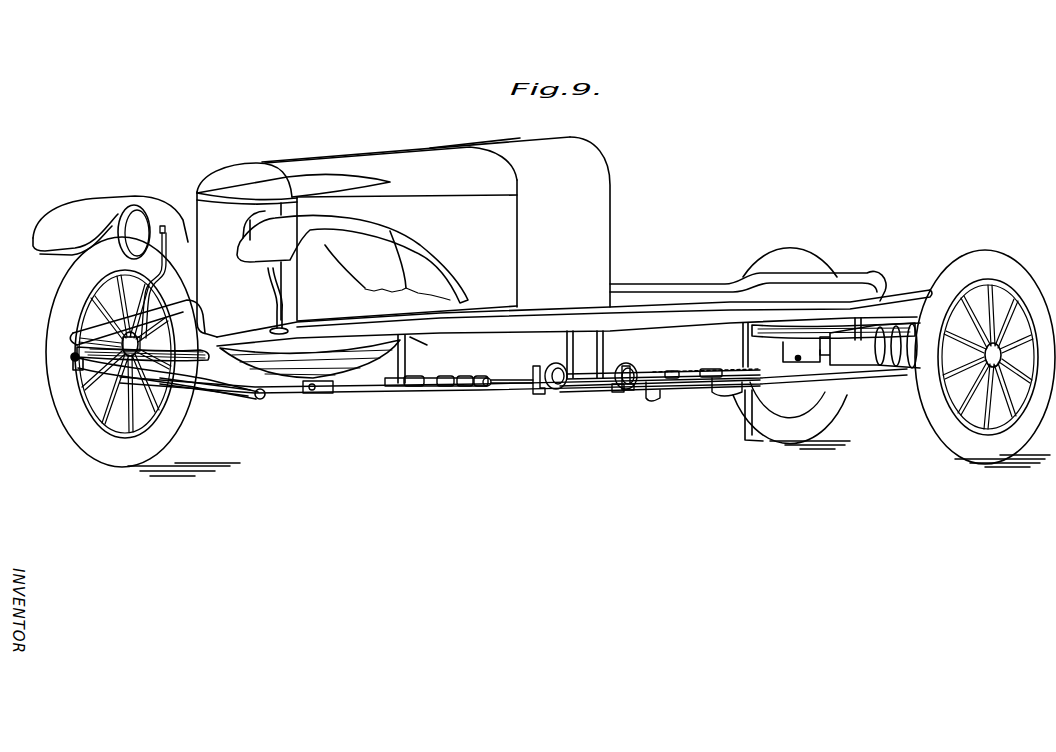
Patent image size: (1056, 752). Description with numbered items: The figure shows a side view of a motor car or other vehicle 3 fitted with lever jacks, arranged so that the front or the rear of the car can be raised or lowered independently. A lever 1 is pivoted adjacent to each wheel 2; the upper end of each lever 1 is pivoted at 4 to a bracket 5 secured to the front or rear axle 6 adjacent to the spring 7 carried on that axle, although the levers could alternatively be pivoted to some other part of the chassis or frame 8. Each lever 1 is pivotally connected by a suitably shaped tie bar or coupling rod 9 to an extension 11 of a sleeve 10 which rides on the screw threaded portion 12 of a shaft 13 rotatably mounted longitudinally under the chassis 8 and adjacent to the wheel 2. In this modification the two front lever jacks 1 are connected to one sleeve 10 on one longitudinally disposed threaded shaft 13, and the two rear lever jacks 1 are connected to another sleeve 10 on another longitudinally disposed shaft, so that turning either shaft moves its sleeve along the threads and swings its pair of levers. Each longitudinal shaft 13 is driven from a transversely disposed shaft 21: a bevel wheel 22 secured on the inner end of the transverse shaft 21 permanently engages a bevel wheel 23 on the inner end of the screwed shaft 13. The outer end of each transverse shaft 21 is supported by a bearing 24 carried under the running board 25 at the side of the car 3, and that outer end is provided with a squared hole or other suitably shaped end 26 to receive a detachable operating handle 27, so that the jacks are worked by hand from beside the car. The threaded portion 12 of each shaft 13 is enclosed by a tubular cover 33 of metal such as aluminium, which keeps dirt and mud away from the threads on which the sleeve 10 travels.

The lever 1 is at (100, 376).
The wheel 2 is at (176, 428).
The motor car or other vehicle 3 is at (563, 222).
The pivot 4 is at (314, 391).
The bracket 5 is at (305, 394).
The axle 6 is at (222, 385).
The spring 7 is at (80, 362).
The frame or chassis 8 is at (706, 284).
The tie bar or coupling rod 9 is at (178, 388).
The sleeve 10 is at (446, 376).
The extension of sleeve 11 is at (490, 377).
The screw threaded portion 12 is at (467, 376).
The shaft 13 is at (528, 392).
The transverse shaft 21 is at (607, 389).
The bevel wheel 22 is at (543, 370).
The bevel wheel 23 is at (560, 366).
The bearing 24 is at (716, 393).
The running board 25 is at (618, 393).
The squared hole or shaped end 26 is at (654, 400).
The detachable operating handle 27 is at (744, 425).
The tubular cover 33 is at (424, 376).